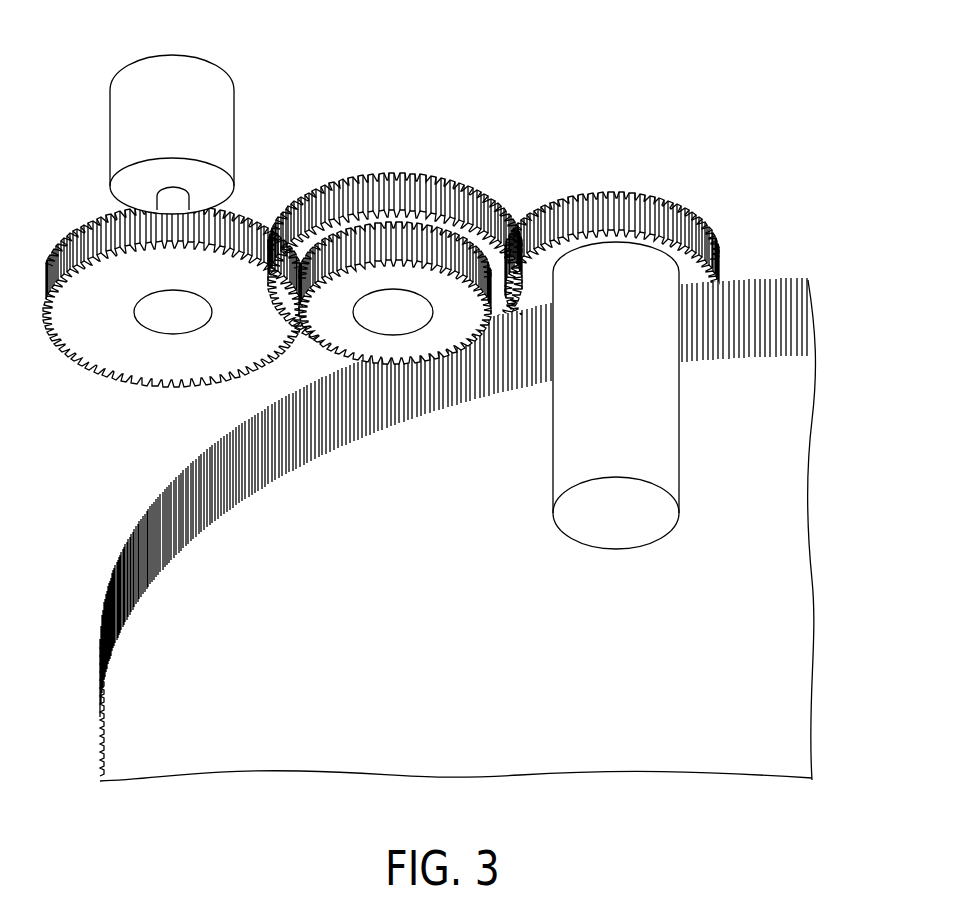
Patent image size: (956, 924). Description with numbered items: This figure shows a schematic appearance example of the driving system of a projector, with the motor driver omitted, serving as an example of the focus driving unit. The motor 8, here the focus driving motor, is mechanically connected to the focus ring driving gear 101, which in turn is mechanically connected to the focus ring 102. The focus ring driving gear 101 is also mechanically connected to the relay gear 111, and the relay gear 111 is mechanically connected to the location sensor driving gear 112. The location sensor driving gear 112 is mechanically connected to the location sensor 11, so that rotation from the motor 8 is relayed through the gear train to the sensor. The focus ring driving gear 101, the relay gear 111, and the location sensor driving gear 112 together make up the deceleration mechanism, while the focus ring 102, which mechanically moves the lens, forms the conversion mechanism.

The location sensor 11 is at (173, 63).
The relay gear 111 is at (395, 174).
The focus ring driving gear 101 is at (655, 193).
The location sensor driving gear 112 is at (115, 352).
The focus ring 102 is at (187, 491).
The motor 8 is at (650, 395).